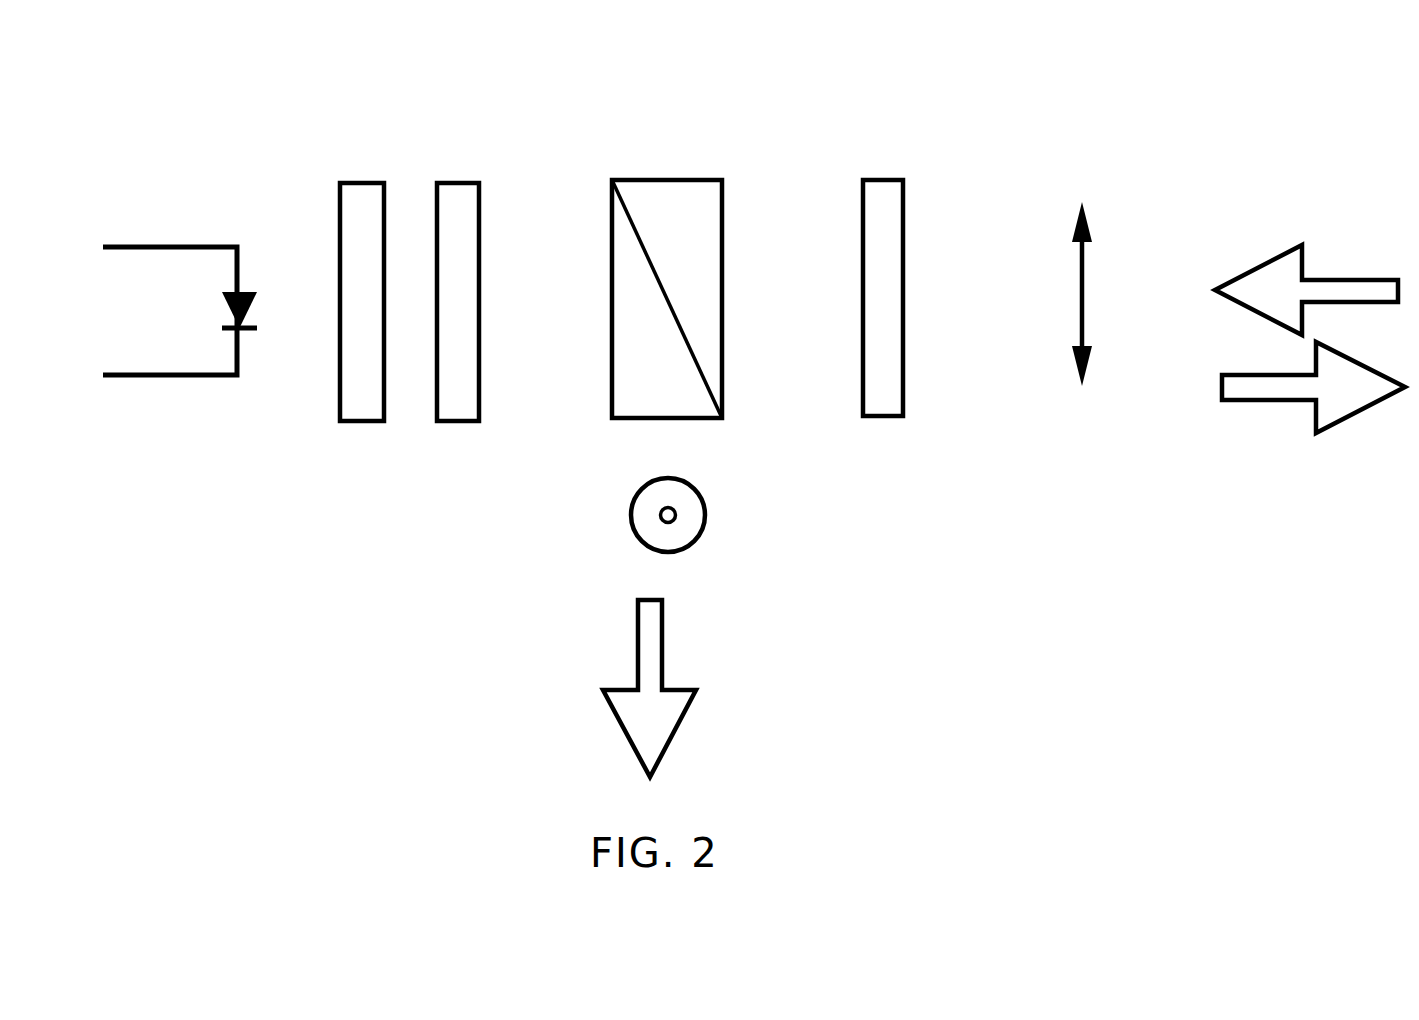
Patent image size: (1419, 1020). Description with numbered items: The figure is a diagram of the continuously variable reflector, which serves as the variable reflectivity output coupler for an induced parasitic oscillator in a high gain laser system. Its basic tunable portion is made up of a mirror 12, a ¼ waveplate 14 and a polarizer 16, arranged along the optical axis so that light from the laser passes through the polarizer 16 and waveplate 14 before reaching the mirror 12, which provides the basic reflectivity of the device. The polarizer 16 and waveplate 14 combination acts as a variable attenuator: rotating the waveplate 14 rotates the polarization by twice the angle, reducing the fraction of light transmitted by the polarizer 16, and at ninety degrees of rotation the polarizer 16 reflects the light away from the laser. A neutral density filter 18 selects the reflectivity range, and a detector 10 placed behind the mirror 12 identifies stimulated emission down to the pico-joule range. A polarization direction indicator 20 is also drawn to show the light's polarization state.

The detector 10 is at (207, 232).
The mirror 12 is at (372, 168).
The ¼ waveplate 14 is at (453, 170).
The polarizer 16 is at (709, 165).
The neutral density filter 18 is at (888, 160).
The polarization direction indicator 20 is at (1097, 185).